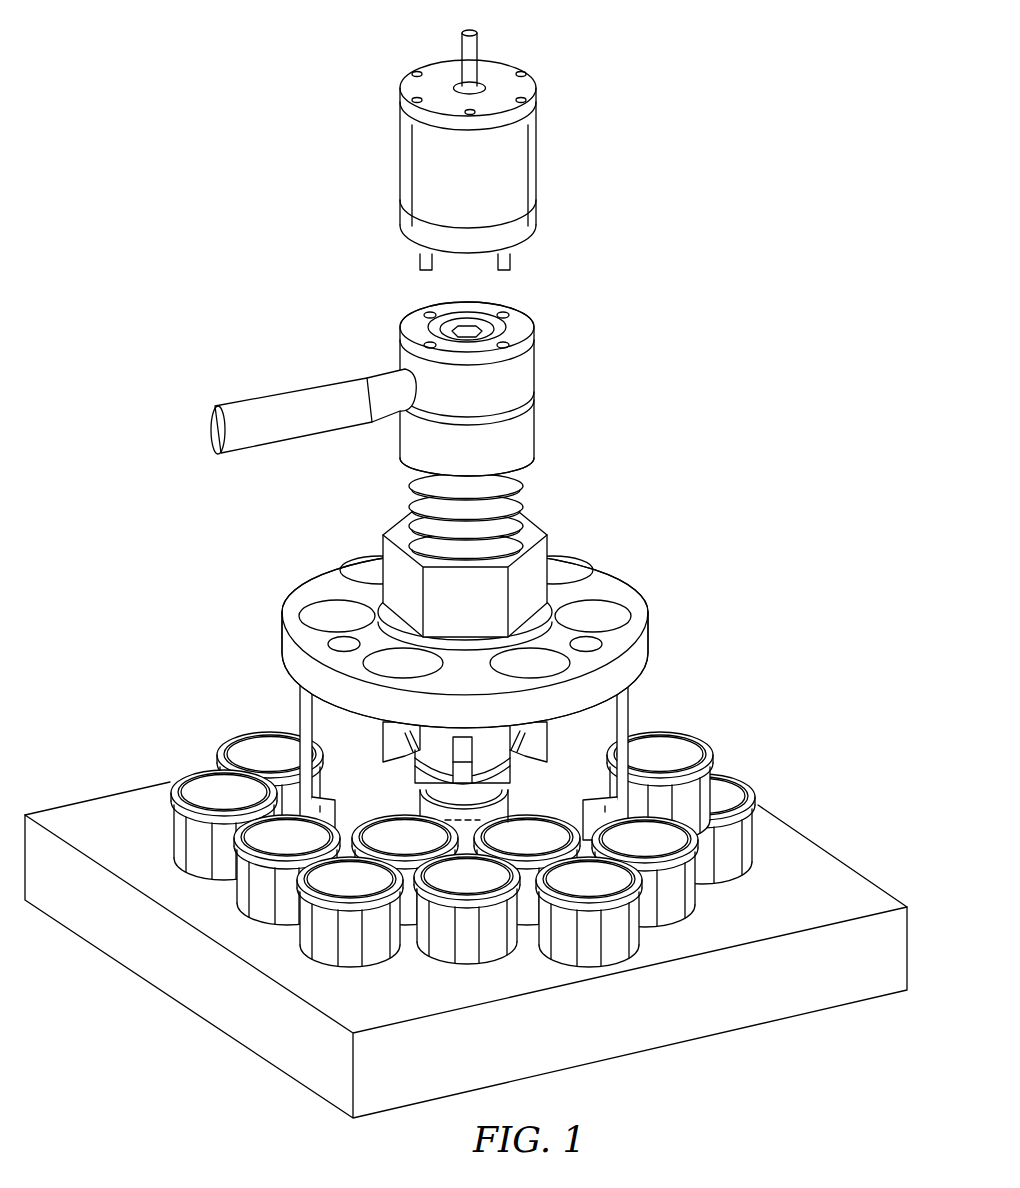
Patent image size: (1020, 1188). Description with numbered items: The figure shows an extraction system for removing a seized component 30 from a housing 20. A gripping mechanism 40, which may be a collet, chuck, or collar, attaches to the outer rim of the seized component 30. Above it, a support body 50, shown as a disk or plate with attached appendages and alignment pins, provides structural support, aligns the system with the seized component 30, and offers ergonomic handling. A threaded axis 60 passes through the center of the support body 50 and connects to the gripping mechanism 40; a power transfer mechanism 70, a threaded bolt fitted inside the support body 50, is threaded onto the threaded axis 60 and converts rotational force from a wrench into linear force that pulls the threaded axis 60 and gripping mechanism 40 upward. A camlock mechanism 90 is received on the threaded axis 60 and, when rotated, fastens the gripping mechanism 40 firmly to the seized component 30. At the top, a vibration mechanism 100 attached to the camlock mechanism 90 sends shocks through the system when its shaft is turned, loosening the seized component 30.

The housing 20 is at (177, 830).
The seized component 30 is at (263, 732).
The gripping mechanism 40 is at (430, 778).
The support body 50 is at (648, 632).
The threaded axis 60 is at (523, 500).
The power transfer mechanism 70 is at (549, 542).
The camlock mechanism 90 is at (535, 364).
The vibration mechanism 100 is at (537, 166).